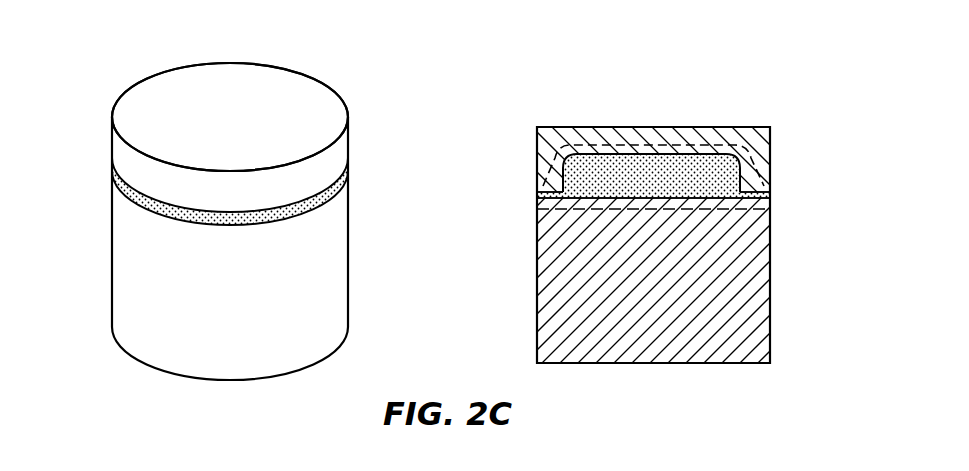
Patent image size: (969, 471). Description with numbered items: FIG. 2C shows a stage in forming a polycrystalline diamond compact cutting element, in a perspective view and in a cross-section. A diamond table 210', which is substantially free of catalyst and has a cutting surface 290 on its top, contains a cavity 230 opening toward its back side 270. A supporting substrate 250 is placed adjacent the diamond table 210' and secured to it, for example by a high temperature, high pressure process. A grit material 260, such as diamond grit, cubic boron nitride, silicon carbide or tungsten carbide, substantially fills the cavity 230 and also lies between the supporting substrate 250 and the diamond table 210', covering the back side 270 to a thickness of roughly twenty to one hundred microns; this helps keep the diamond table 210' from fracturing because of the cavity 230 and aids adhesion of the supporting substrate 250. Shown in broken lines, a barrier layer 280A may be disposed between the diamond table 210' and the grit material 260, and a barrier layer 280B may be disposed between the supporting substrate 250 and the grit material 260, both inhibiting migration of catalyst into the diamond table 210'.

The cutting surface 290 is at (170, 95).
The diamond table 210' is at (494, 129).
The cavity 230 is at (577, 165).
The grit material 260 is at (348, 192).
The back side 270 is at (770, 173).
The supporting substrate 250 is at (348, 265).
The barrier layer 280A is at (697, 146).
The barrier layer 280B is at (742, 210).